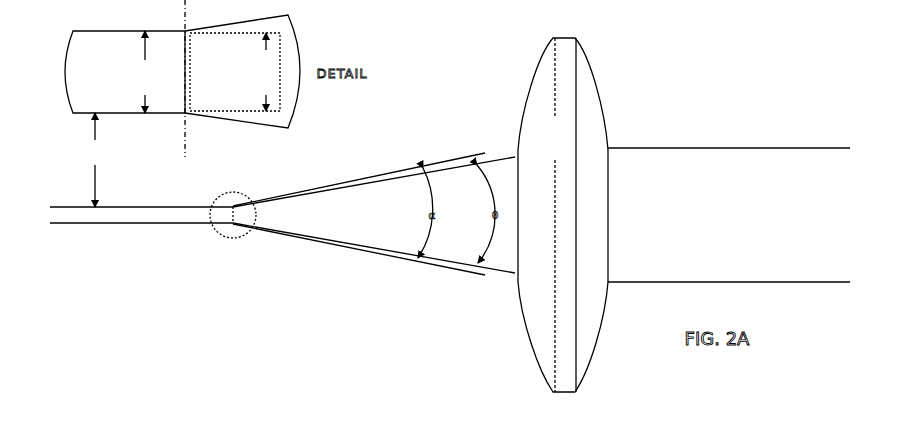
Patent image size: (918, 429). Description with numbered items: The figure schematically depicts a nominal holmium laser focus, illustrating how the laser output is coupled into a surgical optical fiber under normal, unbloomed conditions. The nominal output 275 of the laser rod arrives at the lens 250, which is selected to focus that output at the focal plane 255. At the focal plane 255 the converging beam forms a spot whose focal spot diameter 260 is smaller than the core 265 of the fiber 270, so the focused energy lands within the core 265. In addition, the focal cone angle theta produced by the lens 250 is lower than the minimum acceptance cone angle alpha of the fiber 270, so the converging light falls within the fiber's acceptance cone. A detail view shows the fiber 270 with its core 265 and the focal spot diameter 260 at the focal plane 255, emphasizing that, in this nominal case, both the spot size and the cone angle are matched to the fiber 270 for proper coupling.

The lens 250 is at (566, 151).
The focal plane 255 is at (187, 93).
The focal spot diameter 260 is at (238, 72).
The core 265 is at (147, 72).
The fiber 270 is at (98, 160).
The nominal output 275 is at (729, 215).